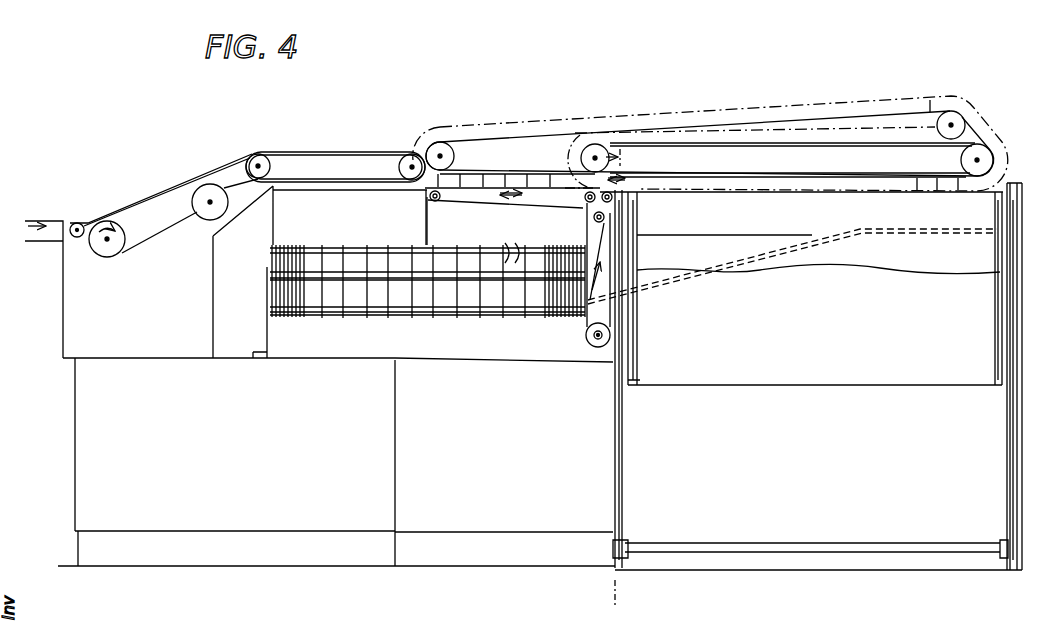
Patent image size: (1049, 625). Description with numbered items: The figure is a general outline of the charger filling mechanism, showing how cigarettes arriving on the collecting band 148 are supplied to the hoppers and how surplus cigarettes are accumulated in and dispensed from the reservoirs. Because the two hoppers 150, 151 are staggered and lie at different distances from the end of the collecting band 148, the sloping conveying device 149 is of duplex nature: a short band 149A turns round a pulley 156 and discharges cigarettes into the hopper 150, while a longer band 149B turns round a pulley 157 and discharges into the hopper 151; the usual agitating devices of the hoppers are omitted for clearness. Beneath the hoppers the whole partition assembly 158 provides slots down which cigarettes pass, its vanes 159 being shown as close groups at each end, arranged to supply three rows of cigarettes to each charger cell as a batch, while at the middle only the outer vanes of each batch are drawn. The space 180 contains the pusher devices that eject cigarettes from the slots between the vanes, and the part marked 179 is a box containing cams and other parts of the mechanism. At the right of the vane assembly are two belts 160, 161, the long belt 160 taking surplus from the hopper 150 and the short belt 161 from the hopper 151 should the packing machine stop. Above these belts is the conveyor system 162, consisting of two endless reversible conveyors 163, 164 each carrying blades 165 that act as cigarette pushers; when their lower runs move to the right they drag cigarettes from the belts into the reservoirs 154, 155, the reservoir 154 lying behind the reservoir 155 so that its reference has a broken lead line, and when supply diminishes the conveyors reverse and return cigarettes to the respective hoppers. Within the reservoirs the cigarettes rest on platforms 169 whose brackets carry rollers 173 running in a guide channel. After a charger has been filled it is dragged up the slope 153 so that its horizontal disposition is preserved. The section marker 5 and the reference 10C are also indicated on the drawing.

The collecting band 148 is at (58, 220).
The sloping conveying device 149 is at (163, 236).
The short band 149A is at (286, 150).
The long band 149B is at (372, 139).
The pulley 156 is at (258, 153).
The pulley 157 is at (403, 169).
The hopper 150 is at (363, 225).
The partition assembly 158 is at (358, 320).
The machine module 10C is at (270, 300).
The space 180 is at (356, 348).
The box 179 is at (503, 487).
The endless reversible conveyor 163 is at (503, 133).
The conveyor system 162 is at (636, 108).
The endless reversible conveyor 164 is at (760, 160).
The blades 165 is at (686, 158).
The hopper 151 is at (500, 216).
The vanes 159 is at (494, 259).
The long belt 160 is at (434, 208).
The short belt 161 is at (586, 327).
The rollers 173 is at (626, 222).
The platforms 169 is at (764, 223).
The slope 153 is at (686, 285).
The reservoir 154 is at (852, 254).
The reservoir 155 is at (815, 366).
The section line 5- 5 is at (600, 146).